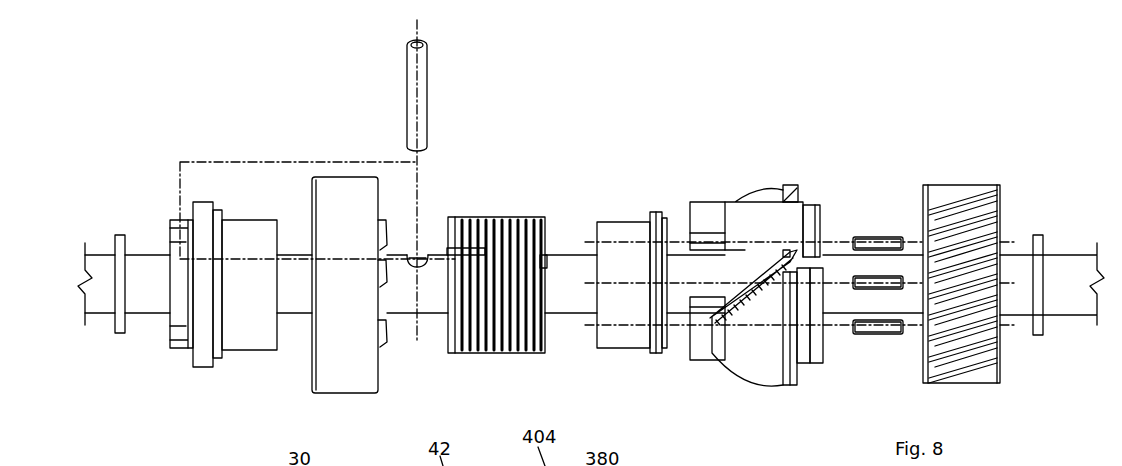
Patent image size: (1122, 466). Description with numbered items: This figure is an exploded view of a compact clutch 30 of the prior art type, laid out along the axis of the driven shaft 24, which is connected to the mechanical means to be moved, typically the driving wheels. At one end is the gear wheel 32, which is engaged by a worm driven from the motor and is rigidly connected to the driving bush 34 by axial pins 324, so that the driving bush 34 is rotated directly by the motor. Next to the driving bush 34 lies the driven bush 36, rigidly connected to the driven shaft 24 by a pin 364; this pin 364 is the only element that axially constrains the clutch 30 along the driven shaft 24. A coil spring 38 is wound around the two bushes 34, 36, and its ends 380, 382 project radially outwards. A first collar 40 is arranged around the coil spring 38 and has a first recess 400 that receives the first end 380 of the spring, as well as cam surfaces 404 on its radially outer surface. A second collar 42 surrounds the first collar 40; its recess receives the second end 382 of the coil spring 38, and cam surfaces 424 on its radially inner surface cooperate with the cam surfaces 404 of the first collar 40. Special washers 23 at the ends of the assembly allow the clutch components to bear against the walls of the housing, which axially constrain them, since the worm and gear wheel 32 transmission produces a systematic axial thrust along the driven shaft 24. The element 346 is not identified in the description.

The clutch 30 is at (267, 103).
The washers 23 is at (119, 330).
The driven shaft 24 is at (1068, 265).
The collar 346 is at (218, 352).
The driven bush 36 is at (237, 338).
The second collar 42 is at (333, 192).
The cam surfaces 424 is at (381, 350).
The pin 364 is at (443, 95).
The coil spring 38 is at (490, 335).
The second end of the coil spring 382 is at (465, 248).
The first end of the coil spring 380 is at (540, 255).
The driving bush 34 is at (614, 228).
The first collar 40 is at (745, 350).
The cam surfaces 404 is at (755, 270).
The first recess 400 is at (815, 260).
The axial pins 324 is at (880, 240).
The gear wheel 32 is at (975, 205).